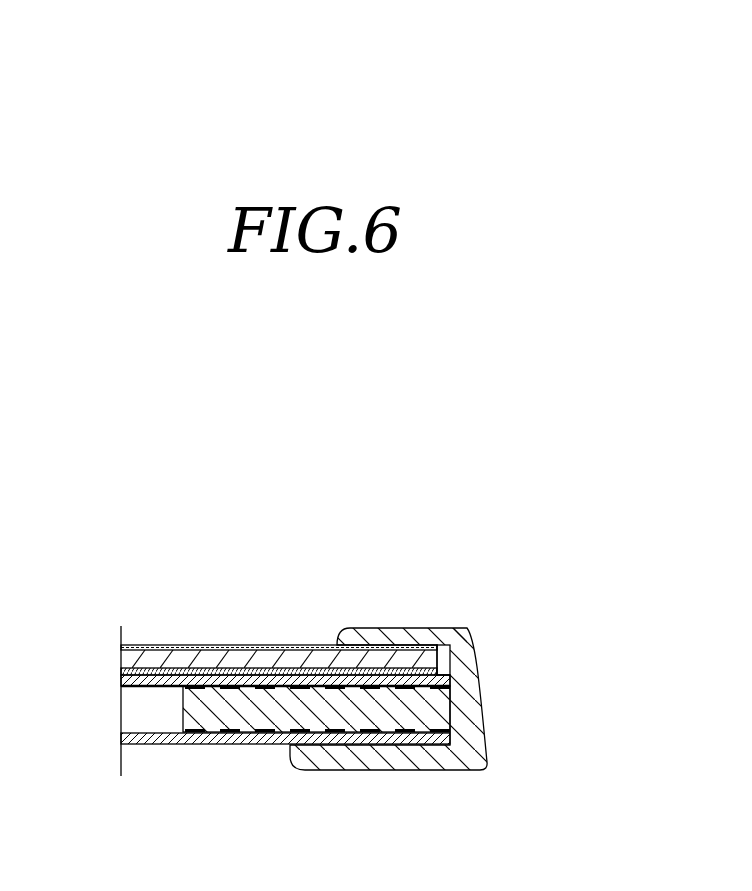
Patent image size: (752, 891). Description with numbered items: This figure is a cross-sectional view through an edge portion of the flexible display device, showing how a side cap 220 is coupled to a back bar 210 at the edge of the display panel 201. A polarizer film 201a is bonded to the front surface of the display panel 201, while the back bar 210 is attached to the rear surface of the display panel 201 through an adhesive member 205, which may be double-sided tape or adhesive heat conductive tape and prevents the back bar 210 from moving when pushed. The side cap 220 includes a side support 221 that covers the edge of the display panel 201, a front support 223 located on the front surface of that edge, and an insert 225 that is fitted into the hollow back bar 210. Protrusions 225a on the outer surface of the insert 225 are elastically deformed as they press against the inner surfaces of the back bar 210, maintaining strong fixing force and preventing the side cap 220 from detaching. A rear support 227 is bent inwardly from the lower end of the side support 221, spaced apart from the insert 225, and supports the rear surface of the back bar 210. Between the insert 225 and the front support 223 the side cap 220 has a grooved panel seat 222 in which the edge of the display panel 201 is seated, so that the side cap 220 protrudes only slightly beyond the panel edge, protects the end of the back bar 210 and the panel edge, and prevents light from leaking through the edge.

The display panel 201 is at (173, 650).
The polarizer film 201a is at (223, 648).
The adhesive member 205 is at (287, 678).
The back bar 210 is at (120, 740).
The side cap 220 is at (493, 568).
The side support 221 is at (470, 693).
The grooved panel seat 222 is at (440, 653).
The front support 223 is at (390, 638).
The insert 225 is at (253, 703).
The protrusions 225a is at (283, 733).
The rear support 227 is at (388, 757).